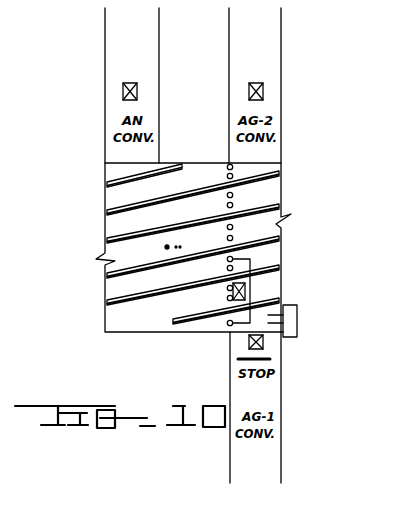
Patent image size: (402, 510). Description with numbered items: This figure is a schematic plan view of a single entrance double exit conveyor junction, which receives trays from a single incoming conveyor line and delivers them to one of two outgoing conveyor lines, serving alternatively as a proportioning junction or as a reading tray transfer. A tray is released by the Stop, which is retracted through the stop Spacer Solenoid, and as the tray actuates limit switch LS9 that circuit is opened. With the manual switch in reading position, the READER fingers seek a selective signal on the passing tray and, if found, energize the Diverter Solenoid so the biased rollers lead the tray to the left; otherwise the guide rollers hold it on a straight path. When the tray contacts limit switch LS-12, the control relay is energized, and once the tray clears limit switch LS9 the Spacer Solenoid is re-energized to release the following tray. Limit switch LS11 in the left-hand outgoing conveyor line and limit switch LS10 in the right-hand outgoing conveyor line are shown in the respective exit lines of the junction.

The limit switch LS11 is at (131, 76).
The limit switch LS10 is at (257, 76).
The limit switch LS-12 is at (245, 290).
The reader READER is at (322, 321).
The limit switch LS9 is at (263, 343).